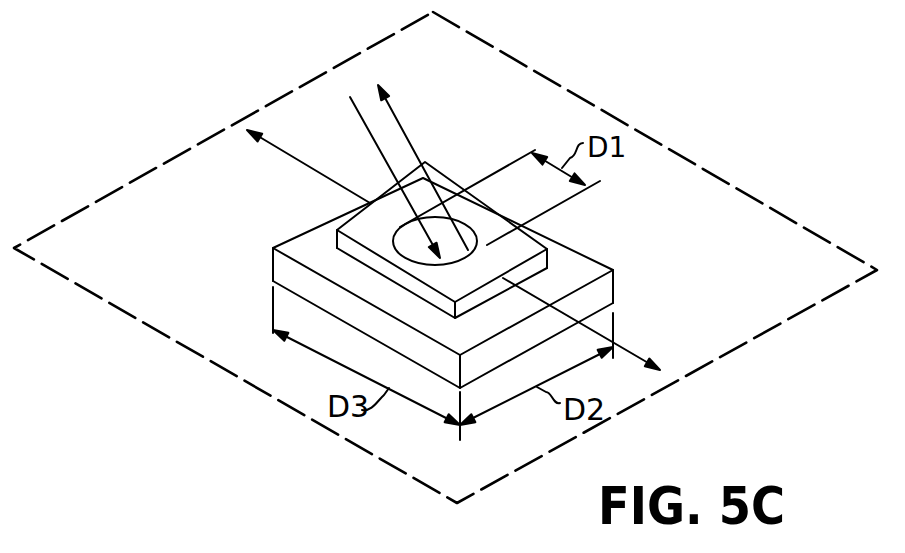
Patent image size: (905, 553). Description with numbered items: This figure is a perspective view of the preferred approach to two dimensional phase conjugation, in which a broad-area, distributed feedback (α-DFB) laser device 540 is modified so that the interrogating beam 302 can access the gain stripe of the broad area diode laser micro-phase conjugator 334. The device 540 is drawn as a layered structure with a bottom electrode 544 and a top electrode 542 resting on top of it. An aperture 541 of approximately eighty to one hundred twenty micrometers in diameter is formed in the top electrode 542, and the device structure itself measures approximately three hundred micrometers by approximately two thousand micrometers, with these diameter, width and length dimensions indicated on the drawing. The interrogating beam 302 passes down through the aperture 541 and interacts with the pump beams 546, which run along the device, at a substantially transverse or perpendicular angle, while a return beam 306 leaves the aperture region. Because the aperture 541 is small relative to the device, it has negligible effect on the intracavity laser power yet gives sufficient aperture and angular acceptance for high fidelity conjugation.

The interrogating beam 302 is at (383, 155).
The reflected light ray 306 is at (397, 117).
The broad area diode laser micro-phase conjugator 334 is at (793, 284).
The broad-area distributed feedback (α-DFB) laser device 540 is at (431, 250).
The aperture 541 is at (433, 215).
The top electrode 542 is at (360, 231).
The bottom electrode 544 is at (287, 269).
The pump beams 546 is at (301, 159).